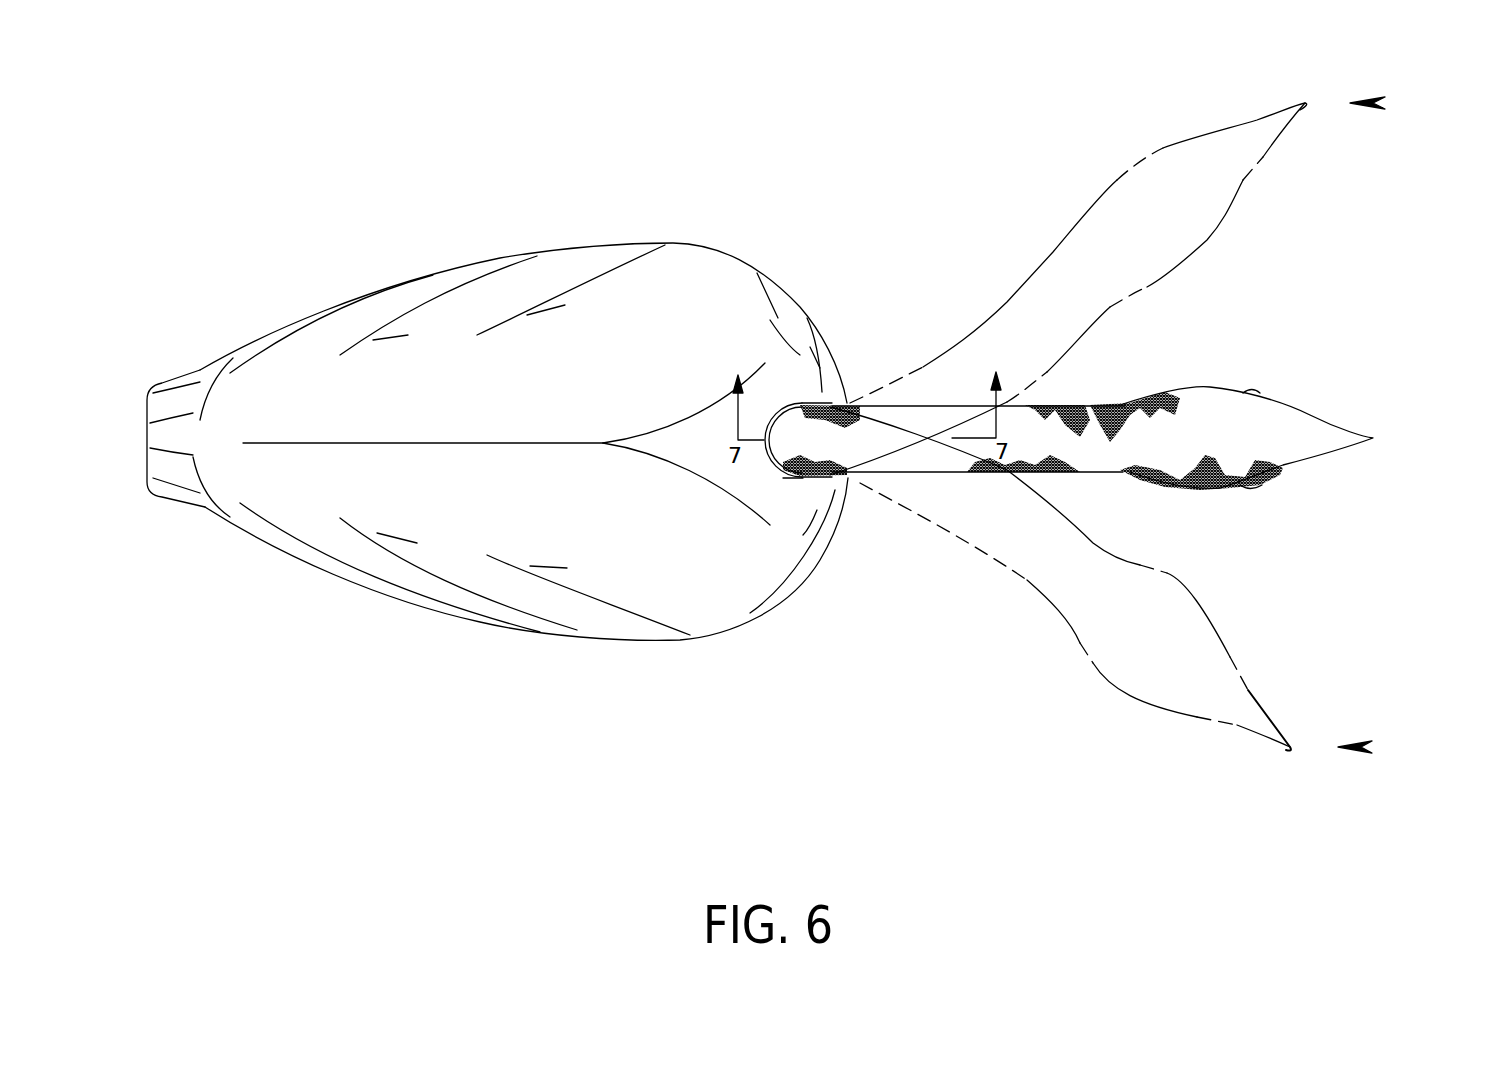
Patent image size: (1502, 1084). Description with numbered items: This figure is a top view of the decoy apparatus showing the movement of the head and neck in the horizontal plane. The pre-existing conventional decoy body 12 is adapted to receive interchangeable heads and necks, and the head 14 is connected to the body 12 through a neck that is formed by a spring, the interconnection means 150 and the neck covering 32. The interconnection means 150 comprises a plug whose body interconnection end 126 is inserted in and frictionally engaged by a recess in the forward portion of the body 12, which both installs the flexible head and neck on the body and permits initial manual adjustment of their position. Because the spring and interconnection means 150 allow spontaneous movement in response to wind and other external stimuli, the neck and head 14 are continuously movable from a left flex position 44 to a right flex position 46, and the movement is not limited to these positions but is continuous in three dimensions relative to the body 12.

The body 12 is at (563, 273).
The head 14 is at (1145, 207).
The body interconnection end 126 is at (786, 403).
The interconnection means 150 is at (795, 478).
The covering 32 is at (1047, 440).
The left flex position 44 is at (1372, 747).
The right flex position 46 is at (1385, 103).